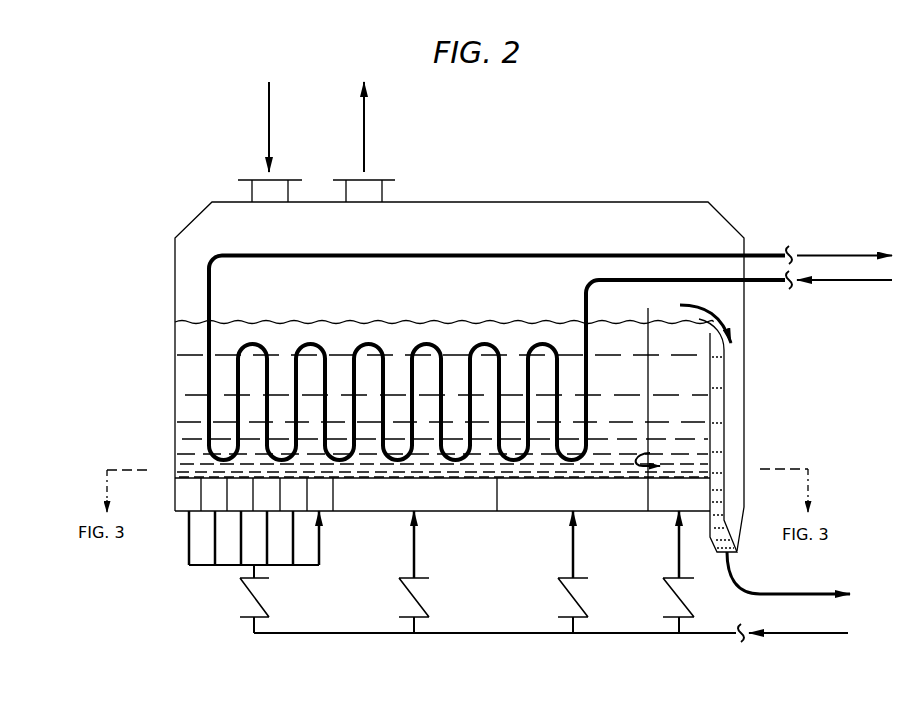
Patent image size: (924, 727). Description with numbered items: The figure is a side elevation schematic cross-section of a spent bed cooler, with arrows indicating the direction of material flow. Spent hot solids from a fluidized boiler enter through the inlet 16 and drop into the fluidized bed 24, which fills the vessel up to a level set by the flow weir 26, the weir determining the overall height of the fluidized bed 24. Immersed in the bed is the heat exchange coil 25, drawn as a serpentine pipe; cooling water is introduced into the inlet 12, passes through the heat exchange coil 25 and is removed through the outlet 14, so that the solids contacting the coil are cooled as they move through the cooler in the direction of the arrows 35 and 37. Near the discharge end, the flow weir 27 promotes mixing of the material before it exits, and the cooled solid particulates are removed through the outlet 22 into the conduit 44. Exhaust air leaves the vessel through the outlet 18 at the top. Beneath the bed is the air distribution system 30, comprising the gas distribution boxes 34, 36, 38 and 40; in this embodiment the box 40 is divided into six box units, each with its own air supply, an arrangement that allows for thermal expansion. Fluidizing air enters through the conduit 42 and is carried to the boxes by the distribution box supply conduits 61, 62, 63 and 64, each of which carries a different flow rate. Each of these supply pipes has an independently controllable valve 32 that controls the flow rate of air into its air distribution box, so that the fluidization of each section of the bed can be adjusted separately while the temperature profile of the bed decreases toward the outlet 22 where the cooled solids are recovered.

The inlet 12 is at (851, 281).
The outlet 14 is at (845, 255).
The inlet 16 is at (277, 180).
The outlet 18 is at (370, 180).
The outlet 22 is at (755, 547).
The fluidized bed 24 is at (192, 368).
The heat exchange coil 25 is at (372, 342).
The flow weir 26 is at (711, 368).
The flow weir 27 is at (649, 405).
The air distribution system 30 is at (493, 623).
The valves 32 is at (256, 600).
The gas distribution box 34 is at (400, 497).
The arrow 35 is at (637, 467).
The gas distribution box 36 is at (557, 497).
The arrow 37 is at (721, 298).
The gas distribution box 38 is at (665, 497).
The gas distribution box 40 is at (188, 495).
The conduit 42 is at (808, 635).
The conduit 44 is at (828, 592).
The distribution box supply conduit 61 is at (679, 624).
The distribution box supply conduit 62 is at (573, 624).
The distribution box supply conduit 63 is at (414, 624).
The distribution box supply conduit 64 is at (254, 624).